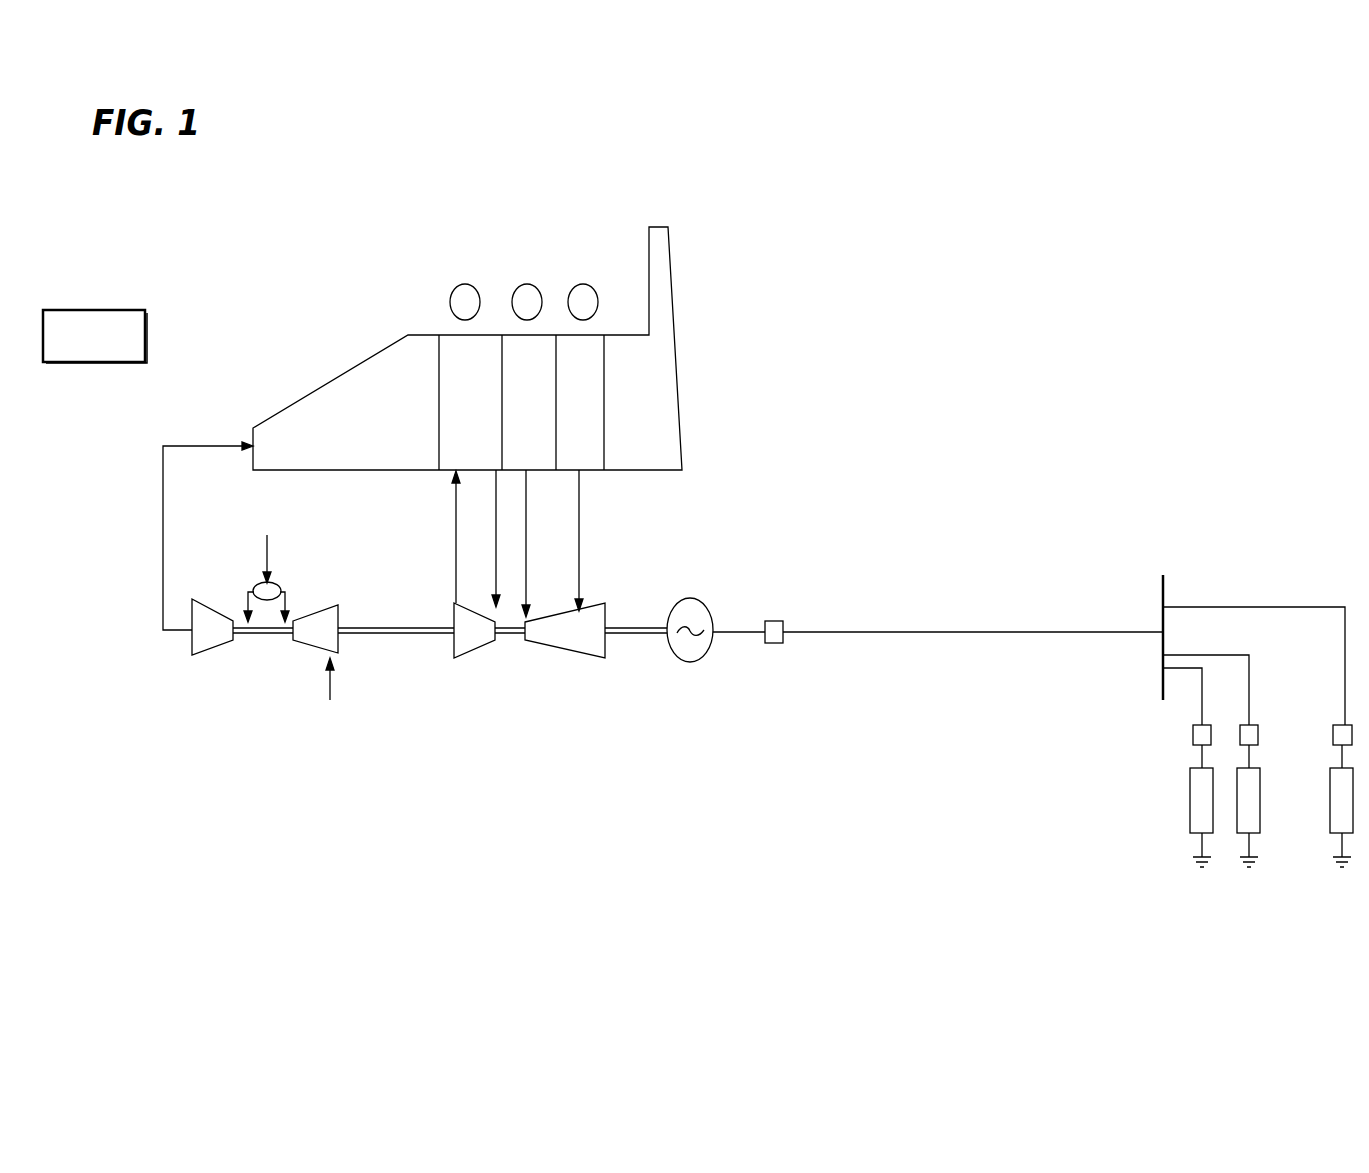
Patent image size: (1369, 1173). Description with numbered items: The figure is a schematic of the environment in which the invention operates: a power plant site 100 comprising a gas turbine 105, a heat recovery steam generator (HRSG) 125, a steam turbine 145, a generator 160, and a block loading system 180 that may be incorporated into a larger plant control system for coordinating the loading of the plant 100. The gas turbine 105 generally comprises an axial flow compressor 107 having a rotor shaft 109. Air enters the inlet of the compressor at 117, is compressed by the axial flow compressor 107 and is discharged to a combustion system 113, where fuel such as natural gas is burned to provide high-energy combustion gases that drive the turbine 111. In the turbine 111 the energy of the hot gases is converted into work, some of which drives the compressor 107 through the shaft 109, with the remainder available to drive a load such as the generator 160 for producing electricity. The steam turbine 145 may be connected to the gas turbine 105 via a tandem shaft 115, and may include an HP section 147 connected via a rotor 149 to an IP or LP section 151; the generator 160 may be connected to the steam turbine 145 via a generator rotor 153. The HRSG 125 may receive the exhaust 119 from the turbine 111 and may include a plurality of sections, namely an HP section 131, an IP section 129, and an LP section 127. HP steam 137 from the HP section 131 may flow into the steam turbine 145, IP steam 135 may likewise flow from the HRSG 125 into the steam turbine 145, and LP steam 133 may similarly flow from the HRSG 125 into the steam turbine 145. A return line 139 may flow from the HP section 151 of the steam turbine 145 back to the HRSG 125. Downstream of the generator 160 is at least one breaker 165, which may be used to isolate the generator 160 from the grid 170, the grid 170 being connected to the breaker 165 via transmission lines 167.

The power plant site 100 is at (323, 197).
The gas turbine 105 is at (223, 697).
The axial flow compressor 107 is at (340, 647).
The rotor shaft 109 is at (259, 637).
The turbine 111 is at (192, 640).
The combustion system 113 is at (255, 587).
The tandem shaft 115 is at (357, 627).
The compressor inlet 117 is at (335, 695).
The exhaust 119 is at (162, 505).
The heat recovery steam generator 125 is at (318, 300).
The LP section 127 is at (599, 419).
The IP section 129 is at (546, 419).
The HP section 131 is at (488, 419).
The LP steam 133 is at (580, 520).
The IP steam 135 is at (528, 560).
The HP steam 137 is at (493, 487).
The return line 139 is at (456, 516).
The steam turbine 145 is at (556, 703).
The HP section 147 is at (579, 655).
The rotor 149 is at (508, 633).
The IP or LP section 151 is at (467, 655).
The generator rotor 153 is at (648, 633).
The generator 160 is at (687, 598).
The breaker 165 is at (773, 645).
The transmission lines 167 is at (983, 632).
The grid 170 is at (1140, 837).
The block loading system 180 is at (113, 310).